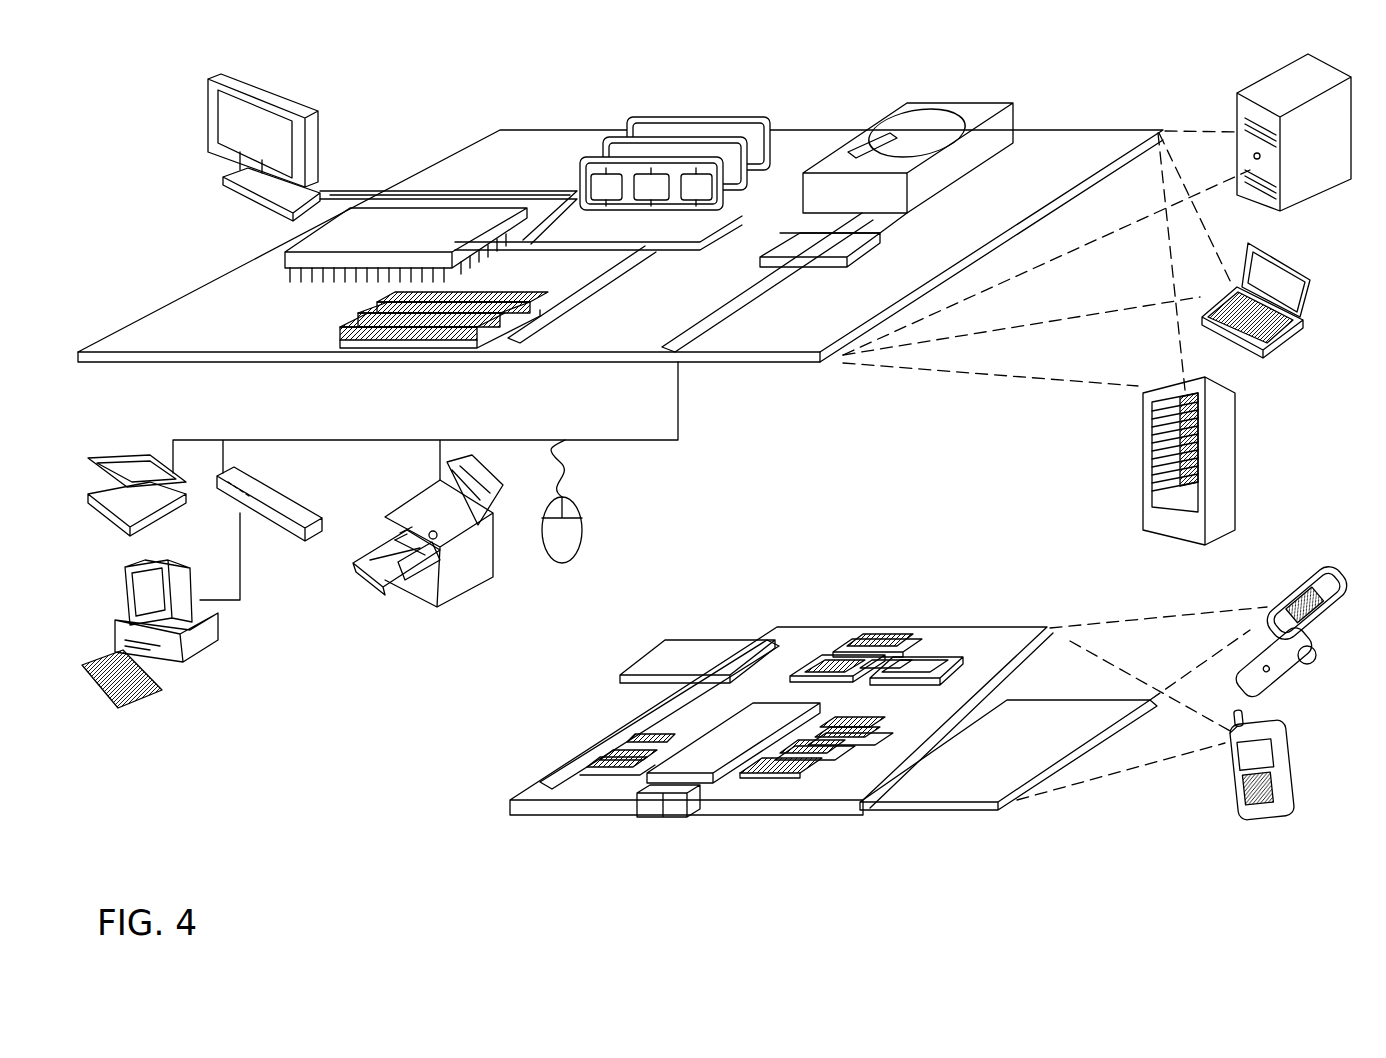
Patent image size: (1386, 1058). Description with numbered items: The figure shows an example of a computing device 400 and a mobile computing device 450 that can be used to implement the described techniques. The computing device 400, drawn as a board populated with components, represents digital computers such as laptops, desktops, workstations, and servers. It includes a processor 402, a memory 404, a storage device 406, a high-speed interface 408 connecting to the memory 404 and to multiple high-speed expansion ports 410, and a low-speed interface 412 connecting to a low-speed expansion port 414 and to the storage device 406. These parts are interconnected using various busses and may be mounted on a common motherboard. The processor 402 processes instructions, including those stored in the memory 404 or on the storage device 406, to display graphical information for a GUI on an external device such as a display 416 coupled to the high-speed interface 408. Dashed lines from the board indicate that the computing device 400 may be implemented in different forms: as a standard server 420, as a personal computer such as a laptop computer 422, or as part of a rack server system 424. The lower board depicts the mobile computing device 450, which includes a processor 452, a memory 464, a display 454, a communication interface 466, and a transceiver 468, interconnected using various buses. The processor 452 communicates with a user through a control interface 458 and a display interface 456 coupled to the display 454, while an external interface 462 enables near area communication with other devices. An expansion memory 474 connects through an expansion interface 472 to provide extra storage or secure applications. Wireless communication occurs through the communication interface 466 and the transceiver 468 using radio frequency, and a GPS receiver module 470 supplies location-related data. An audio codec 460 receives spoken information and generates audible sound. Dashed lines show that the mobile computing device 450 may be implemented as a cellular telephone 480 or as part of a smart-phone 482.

The computing device 400 is at (421, 94).
The processor 402 is at (282, 256).
The memory 404 is at (640, 125).
The storage device 406 is at (890, 108).
The high-speed interface 408 is at (560, 197).
The high-speed expansion ports 410 is at (350, 317).
The low-speed interface 412 is at (800, 235).
The low-speed expansion port 414 is at (697, 353).
The display 416 is at (218, 72).
The standard server 420 is at (1237, 110).
The laptop computer 422 is at (1306, 268).
The rack server system 424 is at (1143, 488).
The mobile computing device 450 is at (483, 815).
The processor 452 is at (703, 773).
The display 454 is at (962, 790).
The display interface 456 is at (778, 792).
The control interface 458 is at (823, 790).
The audio codec 460 is at (848, 760).
The external interface 462 is at (666, 805).
The memory 464 is at (610, 763).
The communication interface 466 is at (832, 668).
The transceiver 468 is at (915, 672).
The GPS receiver module 470 is at (885, 635).
The expansion interface 472 is at (755, 642).
The expansion memory 474 is at (678, 645).
The cellular telephone 480 is at (1293, 580).
The smart-phone 482 is at (1232, 778).